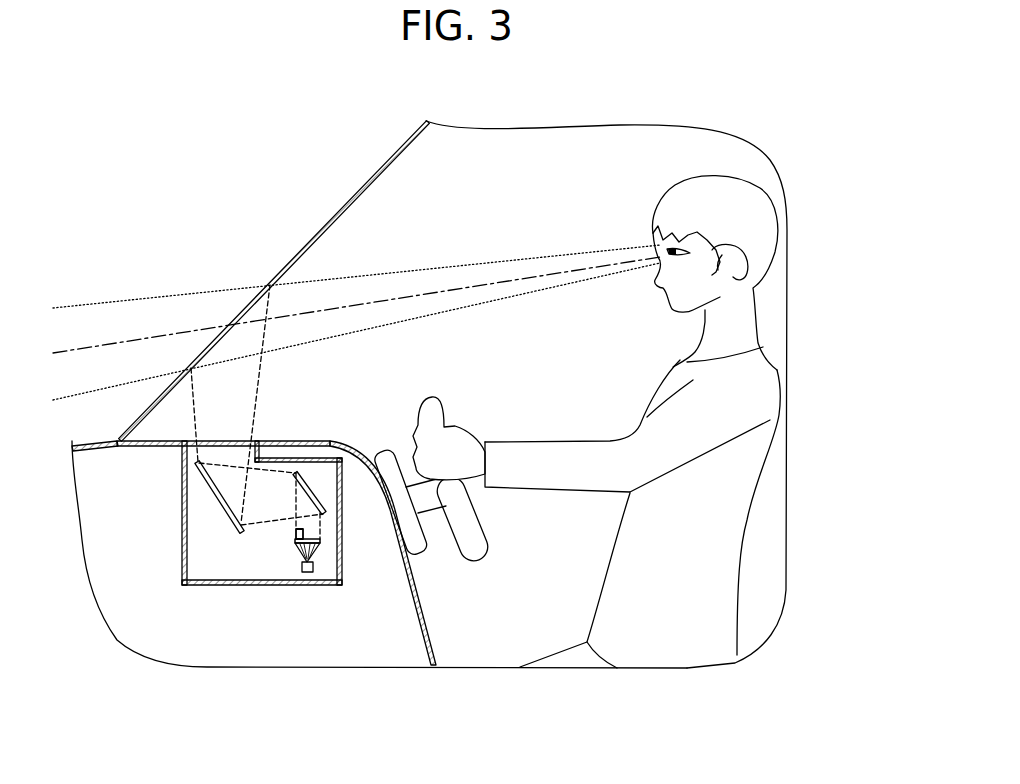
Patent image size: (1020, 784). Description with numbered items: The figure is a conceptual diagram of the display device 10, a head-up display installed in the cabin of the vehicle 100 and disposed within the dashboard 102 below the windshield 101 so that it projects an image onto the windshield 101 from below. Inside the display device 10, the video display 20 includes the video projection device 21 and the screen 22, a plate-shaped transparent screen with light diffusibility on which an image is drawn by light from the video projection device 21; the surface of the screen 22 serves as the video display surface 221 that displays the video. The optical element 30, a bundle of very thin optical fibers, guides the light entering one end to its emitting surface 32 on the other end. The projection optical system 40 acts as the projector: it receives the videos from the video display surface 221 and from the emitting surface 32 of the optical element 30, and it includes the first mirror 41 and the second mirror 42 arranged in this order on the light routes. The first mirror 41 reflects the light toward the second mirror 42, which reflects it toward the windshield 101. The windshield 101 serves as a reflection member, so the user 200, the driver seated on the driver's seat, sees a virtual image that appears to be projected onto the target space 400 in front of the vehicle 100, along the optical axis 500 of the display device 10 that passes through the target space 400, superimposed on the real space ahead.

The display device 10 is at (199, 591).
The video display 20 is at (327, 557).
The video projection device 21 is at (368, 542).
The screen 22 is at (321, 542).
The video display surface 221 is at (311, 536).
The optical element 30 is at (302, 539).
The emitting surface 32 is at (295, 528).
The projection optical system 40 is at (222, 502).
The first mirror 41 is at (303, 492).
The second mirror 42 is at (203, 482).
The vehicle 100 is at (107, 437).
The windshield 101 is at (352, 200).
The dashboard 102 is at (324, 441).
The user 200 is at (682, 197).
The target space 400 is at (137, 298).
The optical axis 500 is at (101, 346).